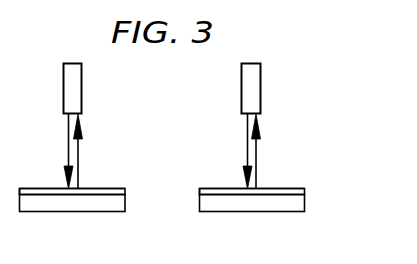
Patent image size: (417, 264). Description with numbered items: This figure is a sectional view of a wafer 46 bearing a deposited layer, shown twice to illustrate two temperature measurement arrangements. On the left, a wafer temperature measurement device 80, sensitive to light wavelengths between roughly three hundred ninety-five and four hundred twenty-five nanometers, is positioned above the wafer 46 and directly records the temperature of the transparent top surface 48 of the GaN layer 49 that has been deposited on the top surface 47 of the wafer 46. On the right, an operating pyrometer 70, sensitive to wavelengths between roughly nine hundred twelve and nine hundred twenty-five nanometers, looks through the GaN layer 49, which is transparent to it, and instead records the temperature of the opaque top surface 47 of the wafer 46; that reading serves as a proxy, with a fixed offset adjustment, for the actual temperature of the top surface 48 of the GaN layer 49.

The wafer 46 is at (126, 205).
The top surface of the wafer 47 is at (113, 188).
The transparent top surface of the GaN layer 48 is at (20, 191).
The GaN layer 49 is at (33, 188).
The operating pyrometer 70 is at (260, 89).
The wafer temperature measurement device 80 is at (82, 90).